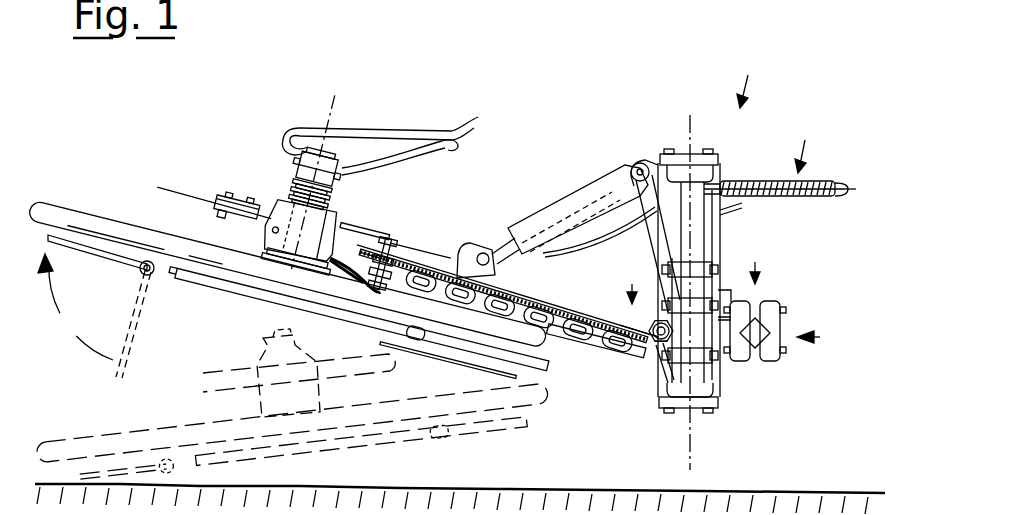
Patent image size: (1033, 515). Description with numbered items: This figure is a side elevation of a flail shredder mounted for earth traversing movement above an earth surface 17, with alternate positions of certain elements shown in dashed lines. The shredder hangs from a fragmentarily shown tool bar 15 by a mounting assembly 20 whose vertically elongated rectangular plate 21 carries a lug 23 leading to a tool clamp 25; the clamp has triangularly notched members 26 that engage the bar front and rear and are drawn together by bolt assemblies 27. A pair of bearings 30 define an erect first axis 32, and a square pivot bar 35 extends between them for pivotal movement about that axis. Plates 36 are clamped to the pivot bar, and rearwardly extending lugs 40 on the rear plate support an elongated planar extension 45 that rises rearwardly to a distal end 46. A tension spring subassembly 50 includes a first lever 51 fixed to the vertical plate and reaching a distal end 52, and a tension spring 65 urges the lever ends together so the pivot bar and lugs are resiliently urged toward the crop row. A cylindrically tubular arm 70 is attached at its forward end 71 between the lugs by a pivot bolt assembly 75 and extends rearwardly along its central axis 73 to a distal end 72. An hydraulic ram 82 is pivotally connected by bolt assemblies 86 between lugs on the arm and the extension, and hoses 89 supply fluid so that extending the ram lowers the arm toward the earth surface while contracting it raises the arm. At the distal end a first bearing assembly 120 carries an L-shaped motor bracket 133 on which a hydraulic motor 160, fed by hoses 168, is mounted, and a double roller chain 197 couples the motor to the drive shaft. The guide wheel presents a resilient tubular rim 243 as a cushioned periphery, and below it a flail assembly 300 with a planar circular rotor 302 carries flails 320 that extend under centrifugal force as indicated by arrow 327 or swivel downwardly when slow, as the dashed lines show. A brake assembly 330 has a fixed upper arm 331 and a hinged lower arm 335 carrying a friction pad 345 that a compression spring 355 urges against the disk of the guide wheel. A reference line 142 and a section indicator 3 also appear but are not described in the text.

The section line 3- 3 is at (694, 268).
The tool bar 15 is at (750, 348).
The earth surface 17 is at (858, 491).
The mounting assembly 20 is at (747, 79).
The vertical plate 21 is at (708, 272).
The lug 23 is at (722, 350).
The tool clamp 25 is at (823, 339).
The triangularly notched members 26 is at (750, 302).
The bolt assemblies 27 is at (782, 315).
The bearings 30 is at (700, 425).
The first axis 32 is at (690, 122).
The pivot bar 35 is at (697, 236).
The plates 36 is at (678, 370).
The lugs 40 is at (656, 340).
The planar extension 45 is at (644, 243).
The distal end 46 is at (638, 150).
The tension spring subassembly 50 is at (809, 145).
The first lever 51 is at (790, 197).
The distal end 52 is at (845, 190).
The tension spring 65 is at (758, 180).
The arm 70 is at (427, 262).
The forward end 71 is at (624, 318).
The distal end 72 is at (214, 206).
The axis 73 is at (172, 188).
The pivot bolt assembly 75 is at (660, 345).
The hydraulic ram 82 is at (586, 222).
The bolt assemblies 86 is at (483, 253).
The hoses 89 is at (622, 213).
The first bearing assembly 120 is at (338, 205).
The L-shaped motor bracket 133 is at (300, 172).
The drive axis 142 is at (338, 112).
The hydraulic motor 160 is at (313, 150).
The hoses 168 is at (470, 120).
The double roller chain 197 is at (300, 196).
The resilient tubular rim 243 is at (32, 200).
The flail assembly 300 is at (190, 302).
The rotor 302 is at (230, 283).
The flails 320 is at (130, 312).
The arrow 327 is at (68, 337).
The brake assembly 330 is at (402, 222).
The upper arm 331 is at (362, 235).
The lower arm 335 is at (348, 280).
The friction pad 345 is at (438, 325).
The compression spring 355 is at (383, 292).